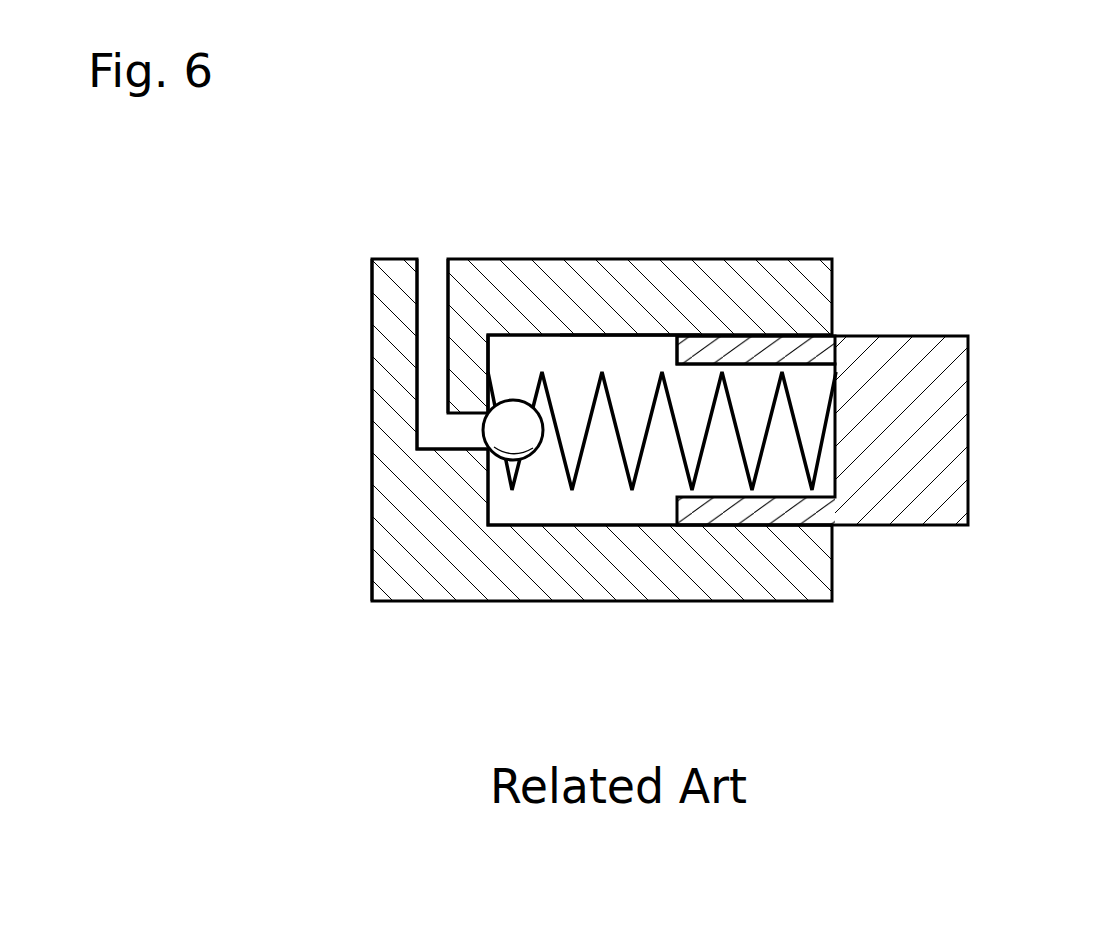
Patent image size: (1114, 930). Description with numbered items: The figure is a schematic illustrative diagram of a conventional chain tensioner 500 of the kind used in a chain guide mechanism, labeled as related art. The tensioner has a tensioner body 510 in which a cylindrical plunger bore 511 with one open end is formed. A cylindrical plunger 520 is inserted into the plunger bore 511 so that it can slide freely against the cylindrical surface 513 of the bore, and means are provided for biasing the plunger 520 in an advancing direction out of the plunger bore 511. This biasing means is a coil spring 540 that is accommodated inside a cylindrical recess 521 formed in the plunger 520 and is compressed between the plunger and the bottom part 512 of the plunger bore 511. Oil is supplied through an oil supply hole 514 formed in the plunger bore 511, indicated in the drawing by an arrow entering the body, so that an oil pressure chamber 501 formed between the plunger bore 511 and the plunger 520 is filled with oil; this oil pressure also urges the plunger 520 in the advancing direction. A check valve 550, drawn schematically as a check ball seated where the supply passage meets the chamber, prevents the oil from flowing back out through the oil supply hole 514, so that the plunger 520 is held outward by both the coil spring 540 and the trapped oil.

The chain tensioner 500 is at (948, 170).
The oil pressure chamber 501 is at (601, 467).
The tensioner body 510 is at (527, 570).
The plunger bore 511 is at (664, 180).
The bottom part 512 is at (489, 365).
The cylindrical surface 513 is at (657, 333).
The oil supply hole 514 is at (434, 240).
The plunger 520 is at (947, 460).
The cylindrical recess 521 is at (773, 365).
The coil spring 540 is at (760, 447).
The check valve 550 is at (481, 428).